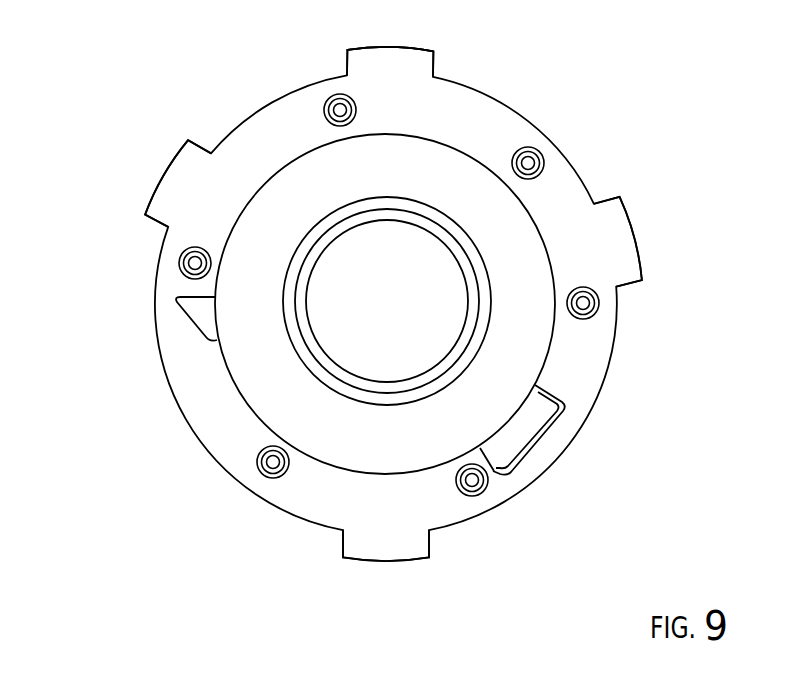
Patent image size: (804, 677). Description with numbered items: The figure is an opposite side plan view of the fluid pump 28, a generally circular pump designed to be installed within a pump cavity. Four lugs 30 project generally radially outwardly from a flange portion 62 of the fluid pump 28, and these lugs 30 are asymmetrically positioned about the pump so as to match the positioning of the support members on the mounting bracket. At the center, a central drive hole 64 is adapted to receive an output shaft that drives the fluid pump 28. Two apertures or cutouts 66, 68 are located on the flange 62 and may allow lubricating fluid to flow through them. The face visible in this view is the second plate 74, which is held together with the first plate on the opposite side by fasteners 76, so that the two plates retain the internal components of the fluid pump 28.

The fluid pump 28 is at (513, 350).
The lugs 30 is at (410, 62).
The flange portion 62 is at (208, 397).
The central drive hole 64 is at (403, 260).
The cutout 66 is at (523, 430).
The cutout 68 is at (192, 309).
The second plate 74 is at (277, 128).
The fasteners 76 is at (543, 157).